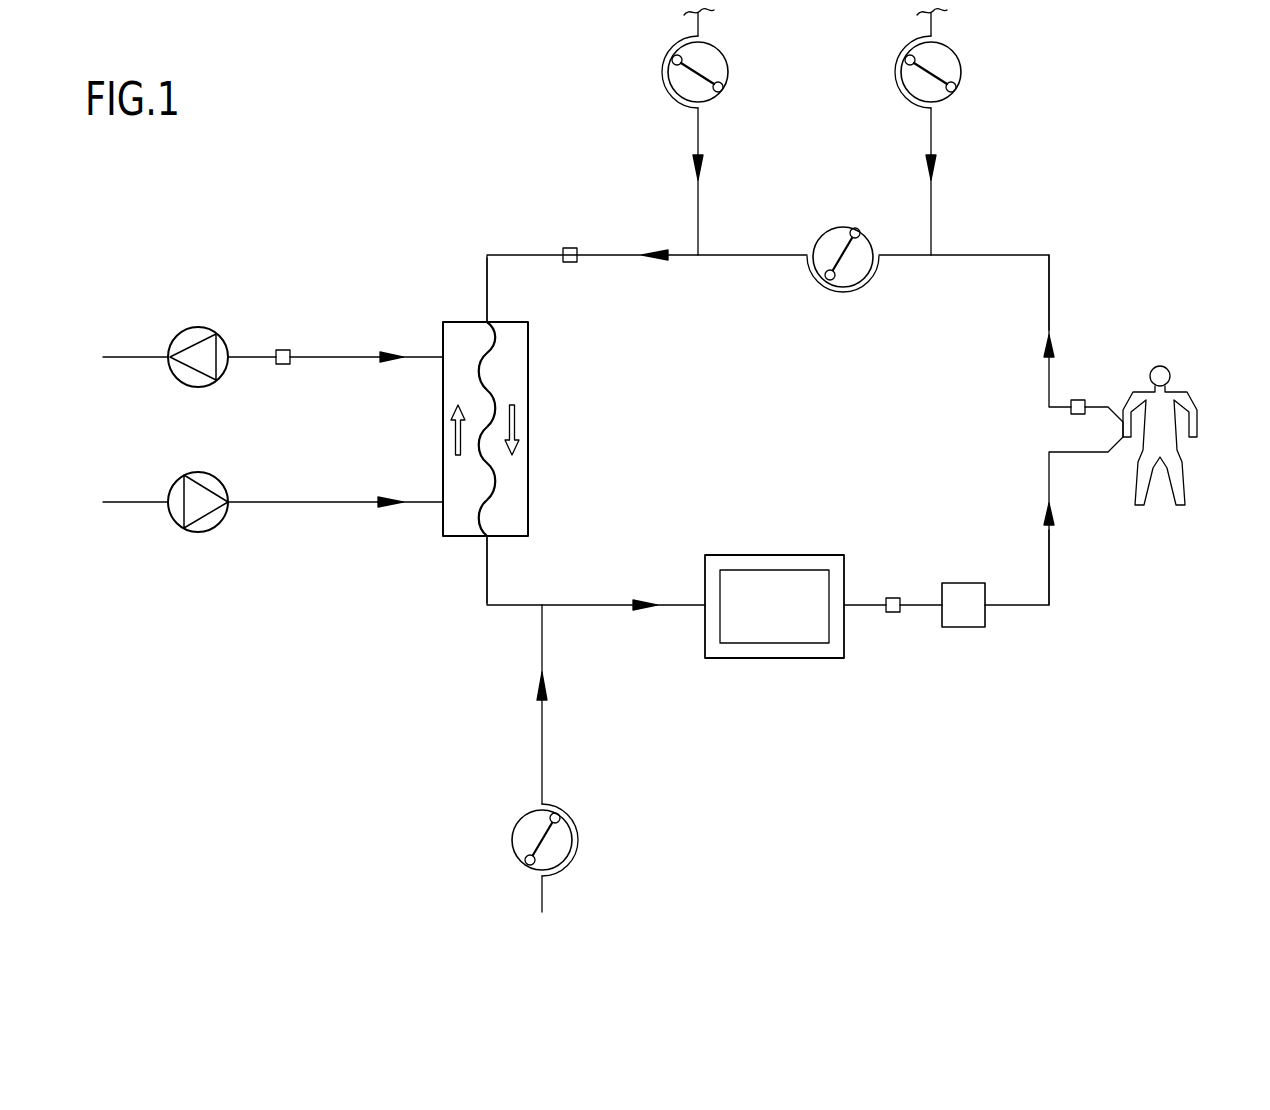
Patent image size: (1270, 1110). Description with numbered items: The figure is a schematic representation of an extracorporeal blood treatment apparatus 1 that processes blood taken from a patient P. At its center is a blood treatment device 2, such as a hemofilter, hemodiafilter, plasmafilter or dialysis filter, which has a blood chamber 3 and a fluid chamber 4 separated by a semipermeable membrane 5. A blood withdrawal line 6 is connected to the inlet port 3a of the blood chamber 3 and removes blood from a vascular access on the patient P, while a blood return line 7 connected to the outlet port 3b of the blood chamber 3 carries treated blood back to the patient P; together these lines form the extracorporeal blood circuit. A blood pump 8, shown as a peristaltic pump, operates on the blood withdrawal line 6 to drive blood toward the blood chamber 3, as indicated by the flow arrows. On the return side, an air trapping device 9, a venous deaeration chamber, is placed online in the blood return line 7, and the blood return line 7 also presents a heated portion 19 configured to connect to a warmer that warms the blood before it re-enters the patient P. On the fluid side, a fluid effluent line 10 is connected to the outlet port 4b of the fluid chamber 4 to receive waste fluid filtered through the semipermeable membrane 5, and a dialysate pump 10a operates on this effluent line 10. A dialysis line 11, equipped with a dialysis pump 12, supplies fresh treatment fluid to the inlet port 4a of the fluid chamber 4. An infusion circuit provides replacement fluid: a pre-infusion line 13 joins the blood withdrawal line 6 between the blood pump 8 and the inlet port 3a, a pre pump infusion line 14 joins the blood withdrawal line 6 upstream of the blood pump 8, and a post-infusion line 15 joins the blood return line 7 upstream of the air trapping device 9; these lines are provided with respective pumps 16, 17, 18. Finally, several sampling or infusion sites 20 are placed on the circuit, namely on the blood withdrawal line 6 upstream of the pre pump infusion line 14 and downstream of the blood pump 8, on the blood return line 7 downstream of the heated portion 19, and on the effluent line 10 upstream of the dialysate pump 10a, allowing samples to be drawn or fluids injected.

The extracorporeal blood treatment apparatus 1 is at (1012, 222).
The blood treatment device 2 is at (434, 274).
The blood chamber 3 is at (501, 380).
The inlet port 3a is at (488, 322).
The outlet port 3b is at (485, 592).
The fluid chamber 4 is at (449, 380).
The inlet port 4a is at (440, 502).
The outlet port 4b is at (440, 357).
The semipermeable membrane 5 is at (475, 520).
The blood withdrawal line 6 is at (1047, 255).
The blood return line 7 is at (1035, 608).
The blood pump 8 is at (815, 248).
The air trapping device 9 is at (962, 628).
The fluid effluent line 10 is at (407, 374).
The dialysate pump 10a is at (190, 325).
The dialysis line 11 is at (406, 520).
The dialysis pump 12 is at (187, 470).
The pre-infusion line 13 is at (674, 25).
The pre pump infusion line 14 is at (957, 25).
The post-infusion line 15 is at (562, 737).
The pump 16 is at (728, 67).
The pump 17 is at (902, 88).
The pump 18 is at (575, 838).
The heated portion 19 is at (768, 582).
The sampling or infusion site 20 is at (570, 248).
The patient P is at (1173, 390).